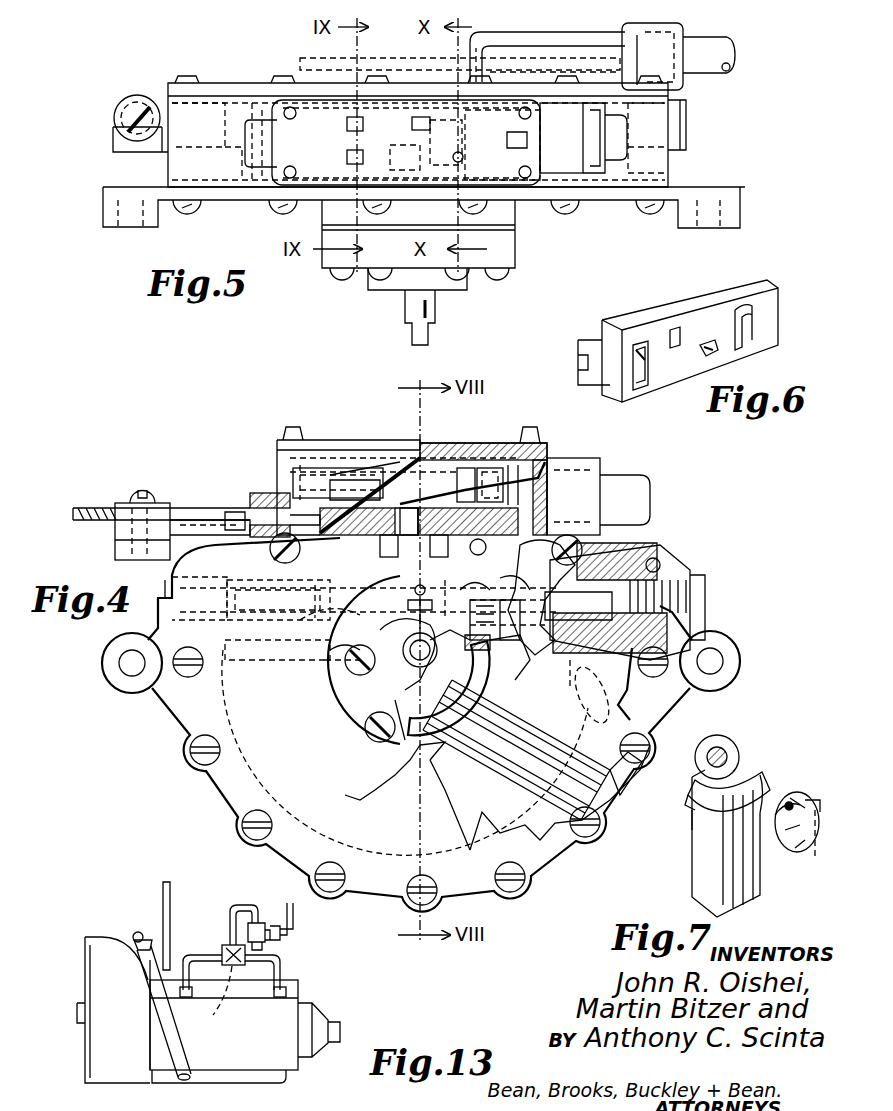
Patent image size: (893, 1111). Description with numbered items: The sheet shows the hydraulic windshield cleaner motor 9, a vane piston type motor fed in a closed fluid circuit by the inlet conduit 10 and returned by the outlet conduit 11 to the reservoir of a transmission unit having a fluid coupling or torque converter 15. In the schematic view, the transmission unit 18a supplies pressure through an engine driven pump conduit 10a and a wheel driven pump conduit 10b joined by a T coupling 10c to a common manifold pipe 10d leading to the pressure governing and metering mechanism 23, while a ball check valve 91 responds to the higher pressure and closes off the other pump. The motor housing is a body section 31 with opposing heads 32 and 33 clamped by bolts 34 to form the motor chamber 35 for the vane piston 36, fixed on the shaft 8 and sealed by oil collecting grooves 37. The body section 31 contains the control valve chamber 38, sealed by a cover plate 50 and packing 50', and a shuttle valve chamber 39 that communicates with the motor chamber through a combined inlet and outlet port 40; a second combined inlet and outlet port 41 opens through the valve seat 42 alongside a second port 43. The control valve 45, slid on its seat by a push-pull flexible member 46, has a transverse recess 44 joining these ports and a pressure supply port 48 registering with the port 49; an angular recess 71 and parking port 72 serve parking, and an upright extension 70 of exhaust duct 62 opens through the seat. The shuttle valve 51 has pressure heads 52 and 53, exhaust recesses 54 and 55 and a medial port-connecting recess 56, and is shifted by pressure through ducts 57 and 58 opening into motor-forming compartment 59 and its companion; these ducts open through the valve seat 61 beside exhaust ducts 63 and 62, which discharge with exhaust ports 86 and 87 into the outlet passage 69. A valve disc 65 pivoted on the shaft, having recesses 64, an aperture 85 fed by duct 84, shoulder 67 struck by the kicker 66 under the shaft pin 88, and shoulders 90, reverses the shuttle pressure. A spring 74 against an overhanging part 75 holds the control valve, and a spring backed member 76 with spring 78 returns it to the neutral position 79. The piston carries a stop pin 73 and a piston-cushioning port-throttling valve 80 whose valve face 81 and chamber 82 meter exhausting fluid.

In FIG. 5, the motor shaft 8 is at (436, 313).
In FIG. 4, the motor shaft 8 is at (370, 710).
In FIG. 5, the windshield cleaner motor 9 is at (160, 174).
In FIG. 4, the windshield cleaner motor 9 is at (257, 746).
In FIG. 5, the inlet conduit 10 is at (620, 145).
In FIG. 4, the inlet conduit 10 is at (618, 478).
In FIG. 13, the inlet conduit 10 is at (295, 916).
In FIG. 13, the engine driven pump conduit 10a is at (188, 966).
In FIG. 13, the wheel driven pump conduit 10b is at (280, 958).
In FIG. 13, the T coupling 10c is at (232, 965).
In FIG. 13, the common manifold pipe 10d is at (242, 903).
In FIG. 5, the outlet conduit 11 is at (708, 46).
In FIG. 4, the outlet conduit 11 is at (712, 620).
In FIG. 13, the outlet conduit 11 is at (163, 898).
In FIG. 13, the fluid coupling or torque converter 15 is at (117, 935).
In FIG. 13, the transmission unit 18a is at (278, 1048).
In FIG. 13, the pressure governing and metering mechanism 23 is at (262, 923).
In FIG. 5, the body section 31 is at (212, 141).
In FIG. 4, the body section 31 is at (628, 678).
In FIG. 5, the head 32 is at (232, 96).
In FIG. 5, the motor head 33 is at (245, 194).
In FIG. 4, the motor head 33 is at (300, 845).
In FIG. 4, the bolts 34 is at (585, 838).
In FIG. 4, the motor chamber 35 is at (478, 802).
In FIG. 4, the vane piston 36 is at (495, 735).
In FIG. 7, the vane piston 36 is at (700, 861).
In FIG. 4, the oil collecting grooves 37 is at (580, 760).
In FIG. 7, the oil collecting grooves 37 is at (745, 895).
In FIG. 5, the control valve chamber 38 is at (282, 130).
In FIG. 4, the control valve chamber 38 is at (548, 448).
In FIG. 5, the shuttle valve chamber 39 is at (252, 104).
In FIG. 4, the shuttle valve chamber 39 is at (600, 565).
In FIG. 4, the combined inlet and outlet port 40 is at (485, 620).
In FIG. 5, the second combined inlet and outlet port 41 is at (347, 158).
In FIG. 4, the second combined inlet and outlet port 41 is at (277, 642).
In FIG. 5, the valve seat 42 is at (500, 133).
In FIG. 4, the valve seat 42 is at (554, 492).
In FIG. 5, the second port 43 is at (347, 124).
In FIG. 6, the transverse recess 44 is at (636, 350).
In FIG. 4, the transverse recess 44 is at (335, 548).
In FIG. 6, the control valve 45 is at (706, 300).
In FIG. 4, the control valve 45 is at (325, 508).
In FIG. 4, the push-pull flexible member 46 is at (210, 508).
In FIG. 6, the pressure supply port 48 is at (716, 345).
In FIG. 4, the pressure supply port 48 is at (417, 521).
In FIG. 5, the port 49 is at (412, 124).
In FIG. 4, the port 49 is at (444, 546).
In FIG. 4, the cover plate 50 is at (448, 554).
In FIG. 4, the packing 50' is at (242, 485).
In FIG. 4, the shuttle valve 51 is at (578, 603).
In FIG. 4, the pressure head 52 is at (631, 596).
In FIG. 4, the pressure head 53 is at (268, 620).
In FIG. 4, the exhaust recess 54 is at (509, 620).
In FIG. 4, the exhaust recess 55 is at (326, 623).
In FIG. 4, the medial port-connecting recess 56 is at (511, 573).
In FIG. 4, the duct 57 is at (255, 590).
In FIG. 4, the duct 58 is at (447, 588).
In FIG. 4, the motor-forming compartment 59 is at (238, 620).
In FIG. 4, the valve seat 61 is at (515, 620).
In FIG. 5, the exhaust duct 62 is at (455, 112).
In FIG. 4, the exhaust duct 62 is at (487, 636).
In FIG. 7, the exhaust duct 62 is at (797, 822).
In FIG. 5, the exhaust duct 63 is at (420, 150).
In FIG. 4, the exhaust duct 63 is at (325, 665).
In FIG. 4, the recesses 64 is at (364, 660).
In FIG. 7, the recesses 64 is at (807, 850).
In FIG. 4, the valve disc 65 is at (368, 700).
In FIG. 4, the kicker 66 is at (398, 742).
In FIG. 7, the kicker 66 is at (812, 784).
In FIG. 4, the shoulder 67 is at (325, 648).
In FIG. 7, the shoulder 67 is at (772, 815).
In FIG. 5, the outlet passage 69 is at (558, 48).
In FIG. 5, the upright extension 70 is at (453, 158).
In FIG. 4, the upright extension 70 is at (475, 573).
In FIG. 6, the angular recess 71 is at (745, 350).
In FIG. 4, the angular recess 71 is at (486, 548).
In FIG. 6, the parking port 72 is at (672, 330).
In FIG. 4, the parking port 72 is at (397, 544).
In FIG. 4, the stop pin 73 is at (568, 708).
In FIG. 4, the spring 74 is at (352, 487).
In FIG. 4, the overhanging part 75 is at (460, 468).
In FIG. 4, the spring backed member 76 is at (487, 468).
In FIG. 4, the spring 78 is at (395, 462).
In FIG. 4, the neutral position 79 is at (514, 450).
In FIG. 4, the piston-cushioning port-throttling valve 80 is at (449, 688).
In FIG. 7, the piston-cushioning port-throttling valve 80 is at (765, 775).
In FIG. 7, the valve face 81 is at (750, 775).
In FIG. 4, the chamber 82 is at (505, 652).
In FIG. 7, the chamber 82 is at (690, 822).
In FIG. 4, the duct 84 is at (424, 577).
In FIG. 4, the aperture 85 is at (456, 635).
In FIG. 7, the aperture 85 is at (790, 783).
In FIG. 4, the exhaust port 86 is at (545, 595).
In FIG. 4, the exhaust port 87 is at (319, 588).
In FIG. 4, the shaft pin 88 is at (422, 656).
In FIG. 4, the shoulders 90 is at (382, 742).
In FIG. 13, the ball check valve 91 is at (219, 1005).